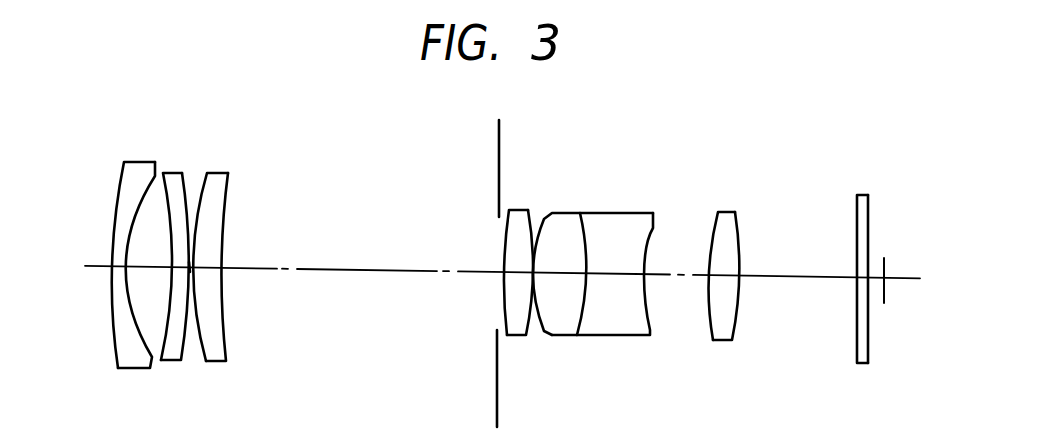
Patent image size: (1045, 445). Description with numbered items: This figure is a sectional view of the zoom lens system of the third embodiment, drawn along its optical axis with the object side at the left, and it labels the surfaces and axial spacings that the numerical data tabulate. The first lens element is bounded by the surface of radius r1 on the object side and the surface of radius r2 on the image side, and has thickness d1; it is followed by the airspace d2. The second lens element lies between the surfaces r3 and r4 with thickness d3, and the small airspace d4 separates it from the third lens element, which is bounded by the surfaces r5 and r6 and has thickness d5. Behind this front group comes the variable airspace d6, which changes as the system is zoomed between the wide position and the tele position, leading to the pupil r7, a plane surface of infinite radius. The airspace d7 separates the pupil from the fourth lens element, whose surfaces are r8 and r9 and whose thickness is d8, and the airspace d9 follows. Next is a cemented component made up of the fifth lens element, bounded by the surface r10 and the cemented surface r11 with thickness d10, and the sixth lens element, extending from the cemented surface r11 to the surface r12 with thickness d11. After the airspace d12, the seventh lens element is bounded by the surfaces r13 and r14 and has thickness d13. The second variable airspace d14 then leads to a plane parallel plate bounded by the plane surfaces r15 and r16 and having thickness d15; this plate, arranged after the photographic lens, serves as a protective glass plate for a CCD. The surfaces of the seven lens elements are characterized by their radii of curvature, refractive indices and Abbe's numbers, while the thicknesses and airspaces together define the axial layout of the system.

The radius of curvature of first lens surface r1 is at (120, 189).
The radius of curvature of second lens surface r2 is at (149, 192).
The radius of curvature of third lens surface r3 is at (166, 192).
The radius of curvature of fourth lens surface r4 is at (187, 191).
The radius of curvature of fifth lens surface r5 is at (198, 190).
The radius of curvature of sixth lens surface r6 is at (231, 191).
The pupil surface r7 is at (500, 152).
The radius of curvature of eighth lens surface r8 is at (512, 209).
The radius of curvature of ninth lens surface r9 is at (533, 215).
The radius of curvature of tenth lens surface r10 is at (545, 216).
The radius of curvature of eleventh lens surface r11 is at (588, 214).
The radius of curvature of twelfth lens surface r12 is at (643, 245).
The radius of curvature of thirteenth lens surface r13 is at (711, 241).
The radius of curvature of fourteenth lens surface r14 is at (738, 243).
The radius of curvature of fifteenth surface r15 is at (857, 218).
The radius of curvature of sixteenth surface r16 is at (868, 218).
The thickness of first lens element d1 is at (118, 272).
The airspace between first and second lens elements d2 is at (150, 270).
The thickness of second lens element d3 is at (180, 272).
The airspace between second and third lens elements d4 is at (192, 274).
The thickness of third lens element d5 is at (218, 271).
The variable airspace D1 d6 is at (348, 272).
The airspace between pupil and fourth lens element d7 is at (505, 274).
The thickness of fourth lens element d8 is at (517, 277).
The airspace between fourth and fifth lens elements d9 is at (535, 282).
The thickness of fifth lens element d10 is at (565, 276).
The thickness of sixth lens element d11 is at (614, 277).
The airspace between sixth and seventh lens elements d12 is at (663, 280).
The thickness of seventh lens element d13 is at (720, 283).
The variable airspace D2 d14 is at (777, 283).
The thickness of plane parallel plate d15 is at (862, 283).